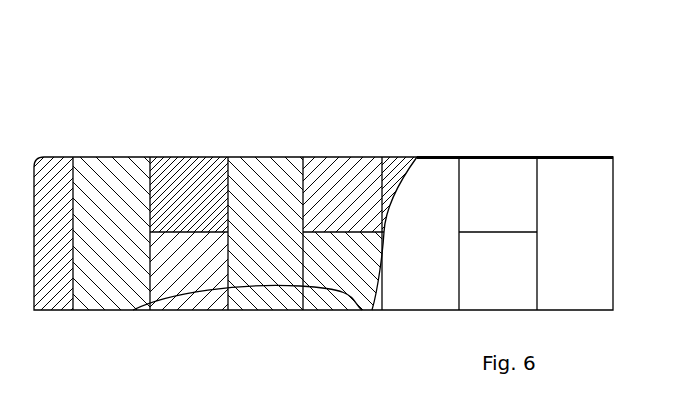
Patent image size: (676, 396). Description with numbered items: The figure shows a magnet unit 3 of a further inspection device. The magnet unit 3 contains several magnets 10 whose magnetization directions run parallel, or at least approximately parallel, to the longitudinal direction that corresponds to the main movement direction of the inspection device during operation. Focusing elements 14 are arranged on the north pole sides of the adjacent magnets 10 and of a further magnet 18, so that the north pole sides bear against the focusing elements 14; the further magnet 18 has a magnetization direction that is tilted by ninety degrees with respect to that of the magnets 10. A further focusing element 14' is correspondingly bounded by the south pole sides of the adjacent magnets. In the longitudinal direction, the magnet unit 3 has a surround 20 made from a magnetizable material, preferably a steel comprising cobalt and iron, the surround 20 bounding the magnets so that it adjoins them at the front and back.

The magnet unit 3 is at (480, 137).
The magnet 10 is at (408, 170).
The focusing element 14 is at (355, 208).
The further focusing element 14' is at (360, 212).
The further magnet 18 is at (168, 295).
The surround 20 is at (49, 295).